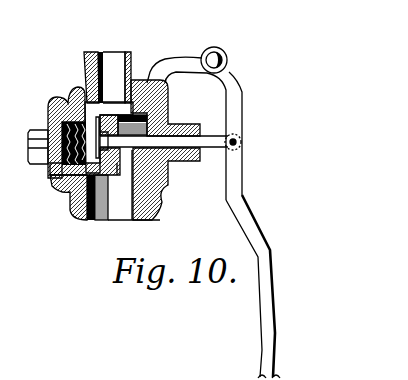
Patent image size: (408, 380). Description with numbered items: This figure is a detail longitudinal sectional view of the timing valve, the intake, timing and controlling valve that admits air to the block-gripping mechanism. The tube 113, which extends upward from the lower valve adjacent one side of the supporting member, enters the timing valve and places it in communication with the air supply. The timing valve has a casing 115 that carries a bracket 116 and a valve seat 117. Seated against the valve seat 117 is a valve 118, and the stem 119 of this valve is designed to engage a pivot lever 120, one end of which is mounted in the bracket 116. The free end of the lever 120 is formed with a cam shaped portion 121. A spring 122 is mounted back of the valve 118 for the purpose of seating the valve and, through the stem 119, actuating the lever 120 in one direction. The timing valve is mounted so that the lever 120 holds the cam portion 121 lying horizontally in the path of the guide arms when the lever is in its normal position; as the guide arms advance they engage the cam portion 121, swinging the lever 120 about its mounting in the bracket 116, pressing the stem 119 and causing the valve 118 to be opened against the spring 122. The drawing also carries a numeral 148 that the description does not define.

The tube 113 is at (105, 65).
The casing 115 is at (152, 68).
The bracket 116 is at (190, 57).
The valve seat 117 is at (108, 214).
The valve 118 is at (97, 165).
The stem 119 is at (173, 143).
The pivot lever 120 is at (238, 170).
The cam shaped portion 121 is at (270, 287).
The spring 122 is at (62, 162).
The sleeve 148 is at (95, 205).